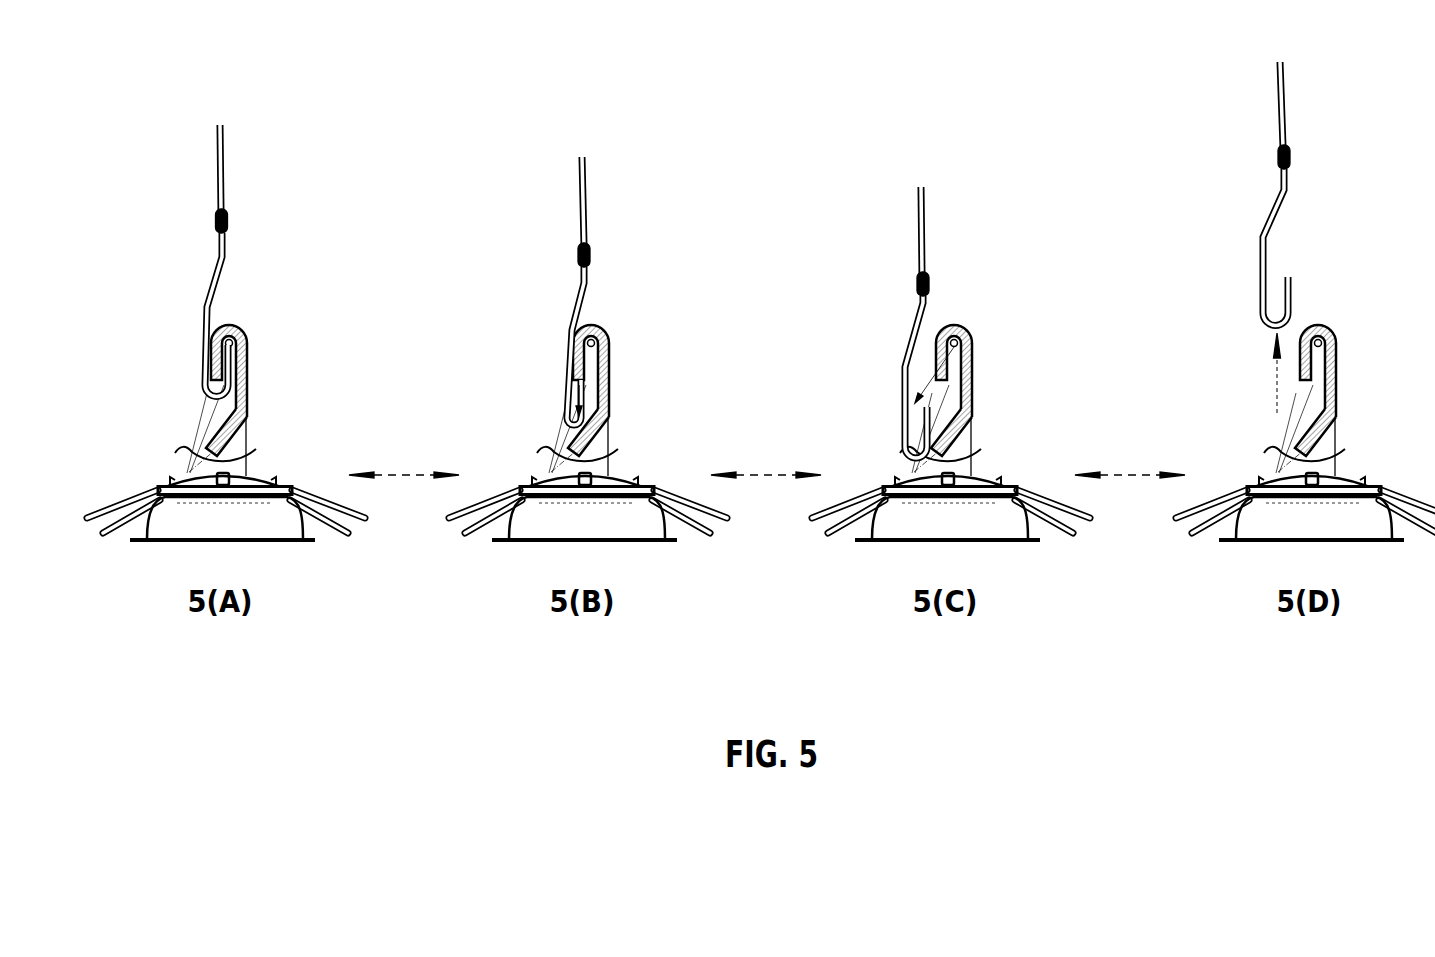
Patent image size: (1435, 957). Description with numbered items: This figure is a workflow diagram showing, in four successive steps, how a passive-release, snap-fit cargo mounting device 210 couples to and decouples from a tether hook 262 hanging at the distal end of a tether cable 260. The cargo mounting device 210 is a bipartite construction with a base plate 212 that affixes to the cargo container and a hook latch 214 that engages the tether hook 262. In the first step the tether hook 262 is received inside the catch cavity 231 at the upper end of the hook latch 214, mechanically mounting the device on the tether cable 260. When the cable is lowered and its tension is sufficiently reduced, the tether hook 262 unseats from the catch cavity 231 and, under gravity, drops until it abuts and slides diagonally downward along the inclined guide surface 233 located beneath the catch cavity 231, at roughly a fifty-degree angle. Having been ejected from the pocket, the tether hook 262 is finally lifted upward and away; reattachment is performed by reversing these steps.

The cargo mounting device 210 is at (275, 302).
The base plate 212 is at (188, 542).
The hook latch 214 is at (246, 437).
The catch cavity 231 is at (233, 344).
The guide surface 233 is at (212, 448).
The tether cable 260 is at (217, 143).
The tether hook 262 is at (208, 280).